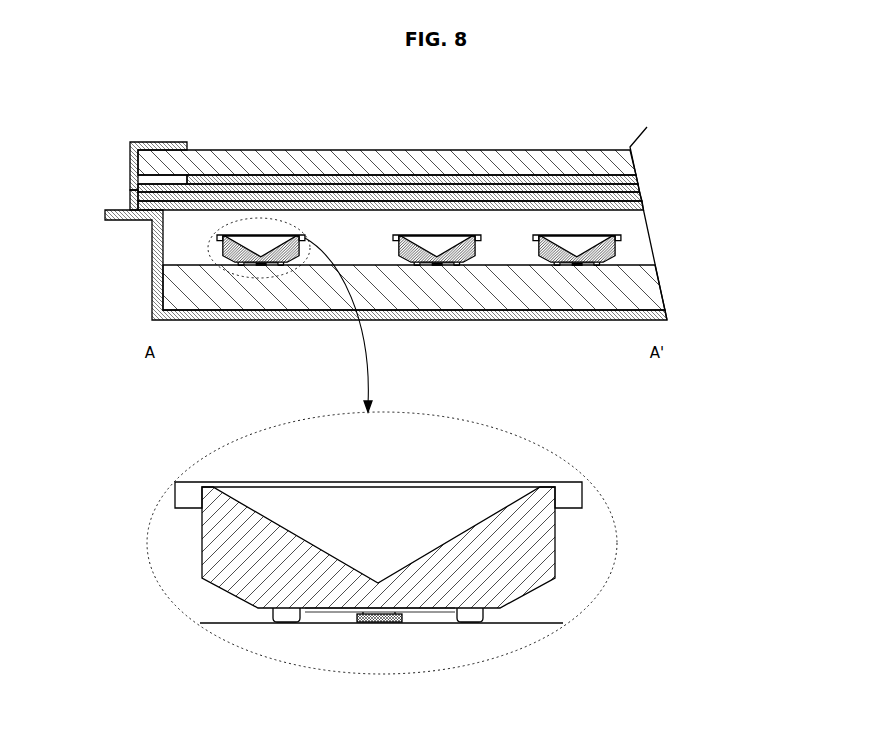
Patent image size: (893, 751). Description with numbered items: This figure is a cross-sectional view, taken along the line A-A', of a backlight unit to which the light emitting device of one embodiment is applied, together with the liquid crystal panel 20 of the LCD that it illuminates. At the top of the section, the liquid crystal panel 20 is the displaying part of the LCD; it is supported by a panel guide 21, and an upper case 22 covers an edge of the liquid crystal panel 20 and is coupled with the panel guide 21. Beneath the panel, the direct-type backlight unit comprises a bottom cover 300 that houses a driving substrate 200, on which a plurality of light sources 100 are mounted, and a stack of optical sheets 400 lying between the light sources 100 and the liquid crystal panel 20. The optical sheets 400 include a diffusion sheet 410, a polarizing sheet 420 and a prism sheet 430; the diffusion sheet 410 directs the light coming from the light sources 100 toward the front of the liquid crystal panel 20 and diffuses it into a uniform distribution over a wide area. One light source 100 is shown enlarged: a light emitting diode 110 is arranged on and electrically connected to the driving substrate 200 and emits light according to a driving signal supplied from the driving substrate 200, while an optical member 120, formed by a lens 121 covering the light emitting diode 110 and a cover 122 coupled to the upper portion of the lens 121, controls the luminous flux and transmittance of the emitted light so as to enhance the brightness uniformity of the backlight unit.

The liquid crystal panel 20 is at (225, 150).
The panel guide 21 is at (124, 195).
The upper case 22 is at (124, 158).
The light source 100 is at (483, 419).
The light emitting diode 110 is at (410, 621).
The optical member 120 is at (672, 482).
The lens 121 is at (558, 530).
The cover 122 is at (583, 481).
The driving substrate 200 is at (408, 298).
The bottom cover 300 is at (603, 320).
The optical sheets 400 is at (285, 105).
The diffusion sheet 410 is at (374, 179).
The polarizing sheet 420 is at (335, 188).
The prism sheet 430 is at (293, 196).